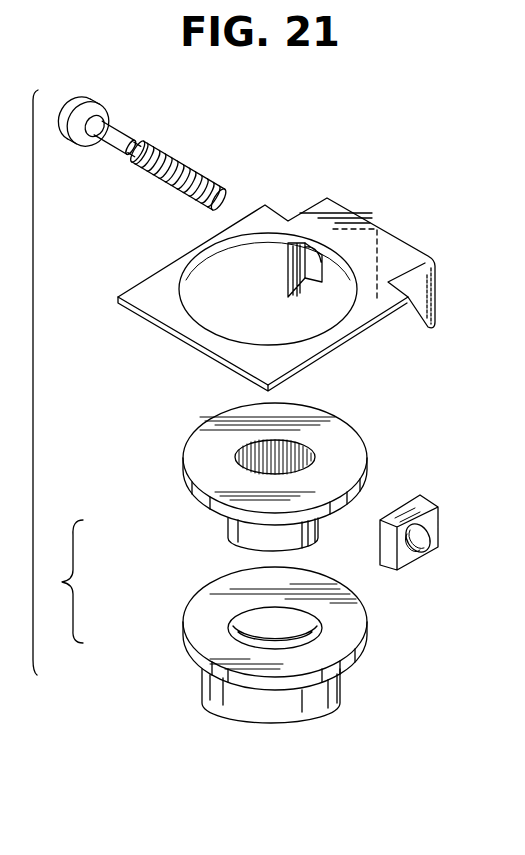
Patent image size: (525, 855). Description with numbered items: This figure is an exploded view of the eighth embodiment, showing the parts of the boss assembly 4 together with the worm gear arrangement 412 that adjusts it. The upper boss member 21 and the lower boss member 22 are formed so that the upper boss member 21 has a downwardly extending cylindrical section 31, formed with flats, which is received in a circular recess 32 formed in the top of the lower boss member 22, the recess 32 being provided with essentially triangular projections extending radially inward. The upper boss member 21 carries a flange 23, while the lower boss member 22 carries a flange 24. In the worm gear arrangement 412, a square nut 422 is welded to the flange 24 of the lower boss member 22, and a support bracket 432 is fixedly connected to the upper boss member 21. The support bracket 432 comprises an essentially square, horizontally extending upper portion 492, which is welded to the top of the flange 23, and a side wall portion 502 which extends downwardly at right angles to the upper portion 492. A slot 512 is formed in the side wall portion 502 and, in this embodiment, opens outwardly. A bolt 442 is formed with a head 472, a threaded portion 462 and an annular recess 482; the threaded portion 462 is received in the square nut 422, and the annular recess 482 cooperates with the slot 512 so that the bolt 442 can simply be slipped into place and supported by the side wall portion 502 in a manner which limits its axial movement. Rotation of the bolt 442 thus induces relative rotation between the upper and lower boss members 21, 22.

The grommet assembly 4 is at (58, 382).
The upper boss member 21 is at (225, 489).
The lower boss member 22 is at (253, 645).
The flange 23 is at (202, 450).
The flange 24 is at (185, 665).
The cylindrical section 31 is at (210, 525).
The circular recess 32 is at (307, 614).
The worm gear arrangement 412 is at (298, 250).
The square nut 422 is at (441, 546).
The support bracket 432 is at (414, 237).
The bolt 442 is at (260, 348).
The threaded portion 462 is at (232, 118).
The head 472 is at (92, 105).
The annular recess 482 is at (140, 140).
The upper portion 492 is at (143, 285).
The side wall portion 502 is at (287, 270).
The slot 512 is at (308, 290).